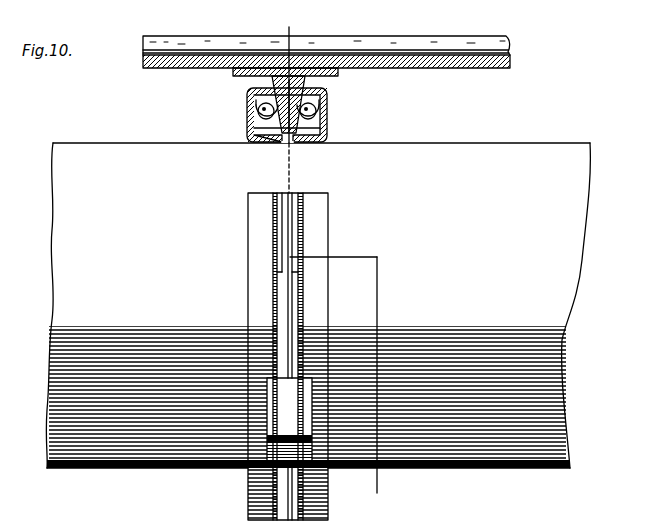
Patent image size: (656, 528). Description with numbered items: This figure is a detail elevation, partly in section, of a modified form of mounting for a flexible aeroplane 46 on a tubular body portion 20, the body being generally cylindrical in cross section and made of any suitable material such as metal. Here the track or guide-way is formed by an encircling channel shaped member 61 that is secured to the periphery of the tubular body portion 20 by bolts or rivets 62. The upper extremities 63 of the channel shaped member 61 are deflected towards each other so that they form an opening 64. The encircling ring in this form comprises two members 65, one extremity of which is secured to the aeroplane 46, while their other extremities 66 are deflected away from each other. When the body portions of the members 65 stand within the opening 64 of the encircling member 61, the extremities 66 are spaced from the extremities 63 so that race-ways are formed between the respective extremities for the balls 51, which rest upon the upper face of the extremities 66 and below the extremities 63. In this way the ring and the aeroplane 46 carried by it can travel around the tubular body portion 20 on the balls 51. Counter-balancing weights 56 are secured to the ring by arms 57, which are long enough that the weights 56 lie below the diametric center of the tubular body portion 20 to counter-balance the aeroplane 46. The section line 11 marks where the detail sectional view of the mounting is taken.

The section line 11— 11 is at (304, 27).
The tubular body portion 20 is at (533, 148).
The aeroplane 46 is at (458, 46).
The balls 51 is at (300, 115).
The counter-balancing weights 56 is at (283, 412).
The arms 57 is at (290, 336).
The channel shaped member 61 is at (247, 117).
The bolts or rivets 62 is at (284, 135).
The upper extremities 63 is at (262, 100).
The opening 64 is at (281, 95).
The members 65 is at (297, 100).
The extremities 66 is at (254, 129).